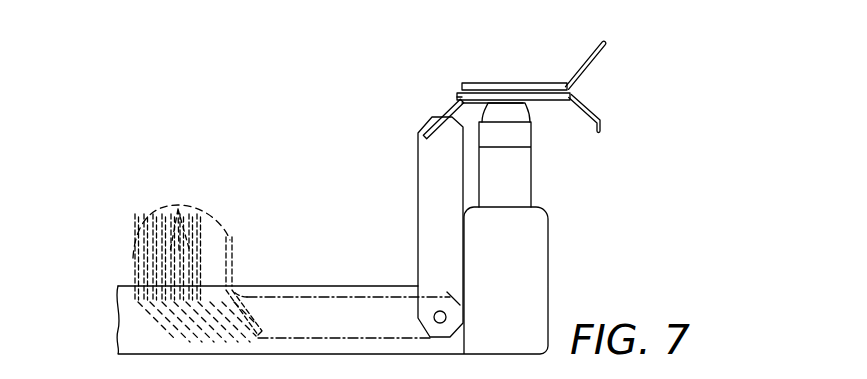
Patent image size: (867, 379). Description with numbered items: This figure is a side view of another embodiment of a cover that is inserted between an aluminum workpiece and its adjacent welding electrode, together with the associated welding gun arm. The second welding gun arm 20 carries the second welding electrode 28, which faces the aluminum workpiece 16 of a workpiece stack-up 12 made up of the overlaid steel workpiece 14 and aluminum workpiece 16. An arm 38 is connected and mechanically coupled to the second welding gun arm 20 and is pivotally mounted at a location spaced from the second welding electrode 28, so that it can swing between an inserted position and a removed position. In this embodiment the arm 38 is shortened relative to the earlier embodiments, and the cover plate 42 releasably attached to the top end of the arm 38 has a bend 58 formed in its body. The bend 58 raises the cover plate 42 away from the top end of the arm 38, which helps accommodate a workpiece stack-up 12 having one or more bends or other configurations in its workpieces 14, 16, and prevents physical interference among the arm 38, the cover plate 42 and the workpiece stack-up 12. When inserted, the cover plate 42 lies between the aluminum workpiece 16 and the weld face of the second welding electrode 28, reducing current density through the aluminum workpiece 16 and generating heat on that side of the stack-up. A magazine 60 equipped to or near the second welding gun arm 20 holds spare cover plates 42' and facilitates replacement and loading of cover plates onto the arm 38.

The workpiece stack-up 12 is at (572, 85).
The steel workpiece 14 is at (523, 82).
The aluminum workpiece 16 is at (550, 100).
The second welding gun arm 20 is at (548, 268).
The second welding electrode 28 is at (533, 147).
The arm 38 is at (418, 176).
The cover plate 42 is at (422, 114).
The spare cover plates 42' is at (197, 261).
The bend 58 is at (458, 102).
The magazine 60 is at (127, 275).